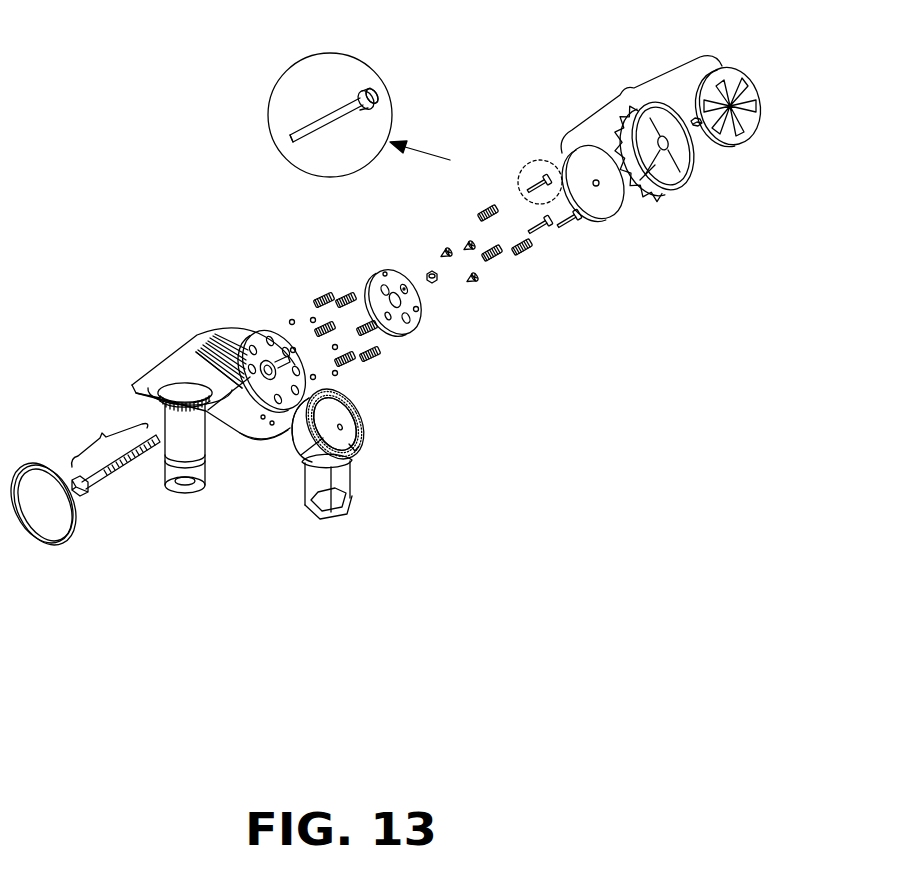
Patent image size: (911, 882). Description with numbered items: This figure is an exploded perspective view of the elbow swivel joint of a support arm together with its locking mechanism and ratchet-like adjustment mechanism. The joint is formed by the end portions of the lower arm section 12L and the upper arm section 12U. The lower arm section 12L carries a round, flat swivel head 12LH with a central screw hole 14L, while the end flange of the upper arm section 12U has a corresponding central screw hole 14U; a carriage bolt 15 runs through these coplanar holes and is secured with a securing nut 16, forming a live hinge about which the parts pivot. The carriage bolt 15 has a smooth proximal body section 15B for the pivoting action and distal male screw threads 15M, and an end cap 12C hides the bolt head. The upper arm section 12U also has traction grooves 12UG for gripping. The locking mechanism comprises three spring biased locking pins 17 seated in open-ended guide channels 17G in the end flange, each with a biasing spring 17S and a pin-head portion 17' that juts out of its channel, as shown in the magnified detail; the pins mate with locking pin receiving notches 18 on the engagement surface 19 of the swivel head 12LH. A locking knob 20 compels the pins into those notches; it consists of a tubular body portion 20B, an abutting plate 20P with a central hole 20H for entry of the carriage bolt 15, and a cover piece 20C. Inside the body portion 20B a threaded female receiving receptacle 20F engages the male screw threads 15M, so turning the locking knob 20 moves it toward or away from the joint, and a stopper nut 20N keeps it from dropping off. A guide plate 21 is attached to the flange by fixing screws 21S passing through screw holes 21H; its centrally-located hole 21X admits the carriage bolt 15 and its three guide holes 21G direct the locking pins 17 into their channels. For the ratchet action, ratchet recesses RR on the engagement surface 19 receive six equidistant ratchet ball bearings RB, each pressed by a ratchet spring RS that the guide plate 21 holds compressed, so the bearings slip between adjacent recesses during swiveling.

The spring biased locking pin 17 is at (460, 178).
The pin-head portion 17' is at (389, 54).
The locking knob 20 is at (641, 103).
The cover piece 20C is at (737, 97).
The stopper nut 20N is at (700, 130).
The female receiving receptacle 20F is at (700, 185).
The tubular body portion 20B is at (678, 197).
The abutting plate 20P is at (614, 208).
The central hole 20H is at (603, 185).
The biasing spring 17S is at (490, 205).
The fixing screw 21S is at (445, 250).
The securing nut 16 is at (436, 286).
The guide plate 21 is at (405, 335).
The guide hole 21G is at (403, 283).
The screw hole 21H is at (382, 273).
The centrally-located hole 21X is at (418, 322).
The ratchet spring RS is at (332, 298).
The ratchet ball bearing RB is at (292, 320).
The upper arm section 12U is at (177, 418).
The open-ended guide channel 17G is at (225, 340).
The traction grooves 12UG is at (190, 350).
The screw hole 14U is at (255, 347).
The carriage bolt 15 is at (109, 437).
The male screw threads 15M is at (125, 466).
The proximal body section 15B is at (88, 494).
The end cap 12C is at (40, 544).
The lower arm section 12L is at (333, 478).
The swivel head 12LH is at (350, 396).
The locking pin receiving notch 18 is at (342, 425).
The engagement surface 19 is at (358, 455).
The screw hole 14L is at (360, 432).
The ratchet recess RR is at (318, 432).